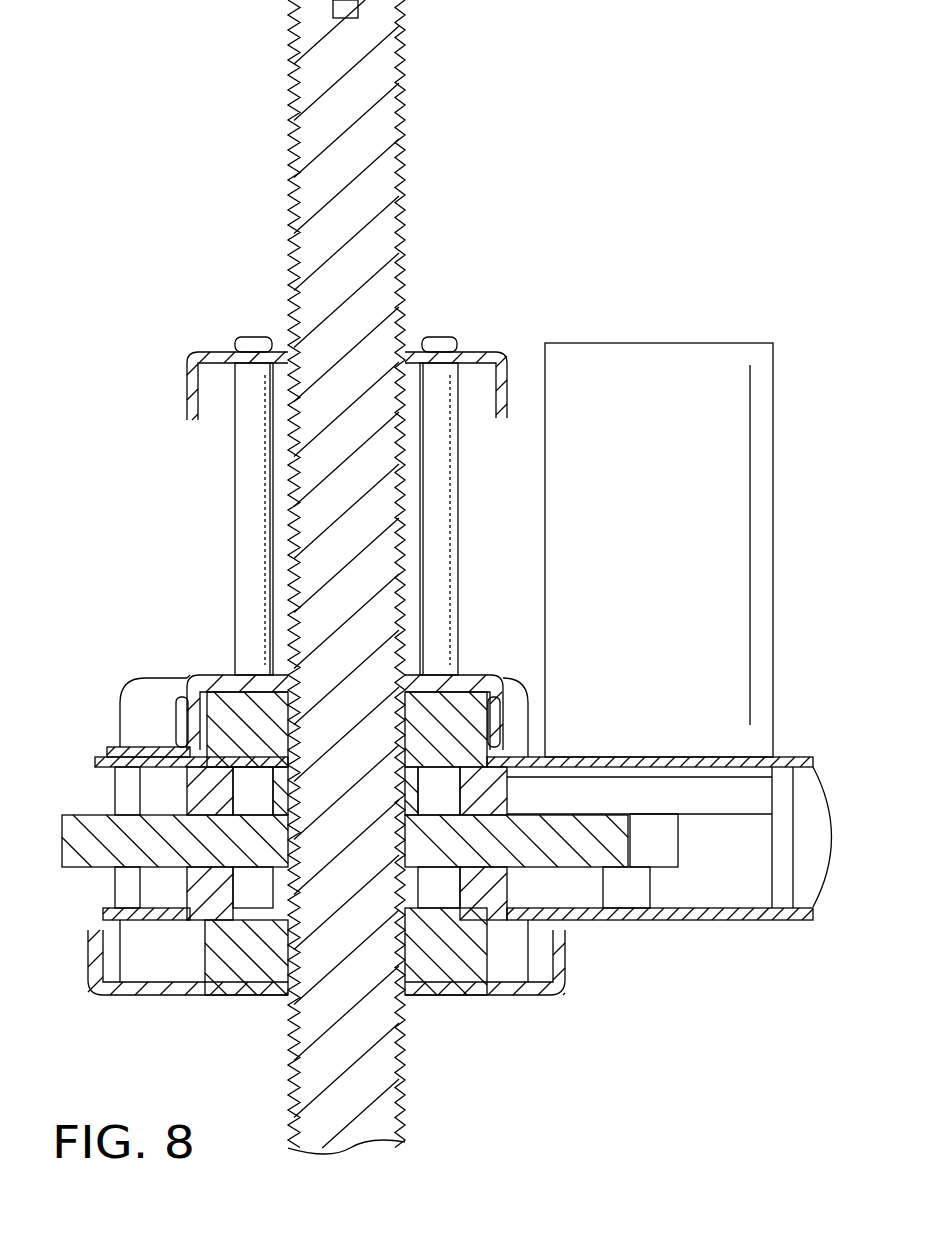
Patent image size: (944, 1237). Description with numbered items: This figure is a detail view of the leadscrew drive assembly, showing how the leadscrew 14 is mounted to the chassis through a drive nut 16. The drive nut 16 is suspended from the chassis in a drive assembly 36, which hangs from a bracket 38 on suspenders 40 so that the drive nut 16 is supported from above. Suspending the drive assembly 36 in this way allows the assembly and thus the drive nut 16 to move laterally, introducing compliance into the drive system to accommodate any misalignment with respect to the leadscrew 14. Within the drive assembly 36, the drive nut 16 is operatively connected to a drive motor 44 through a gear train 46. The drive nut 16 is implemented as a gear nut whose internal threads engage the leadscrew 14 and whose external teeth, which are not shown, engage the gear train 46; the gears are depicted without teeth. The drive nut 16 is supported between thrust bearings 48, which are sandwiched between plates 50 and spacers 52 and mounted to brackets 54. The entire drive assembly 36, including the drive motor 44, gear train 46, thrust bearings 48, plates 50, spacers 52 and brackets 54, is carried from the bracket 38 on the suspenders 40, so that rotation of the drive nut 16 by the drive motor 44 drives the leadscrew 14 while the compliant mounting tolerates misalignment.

The leadscrew 14 is at (386, 222).
The drive nut 16 is at (598, 822).
The drive assembly 36 is at (150, 713).
The bracket 38 is at (470, 355).
The suspenders 40 is at (243, 517).
The drive motor 44 is at (680, 365).
The gear train 46 is at (686, 839).
The thrust bearings 48 is at (495, 803).
The plates 50 is at (819, 837).
The spacers 52 is at (470, 720).
The brackets 54 is at (222, 680).